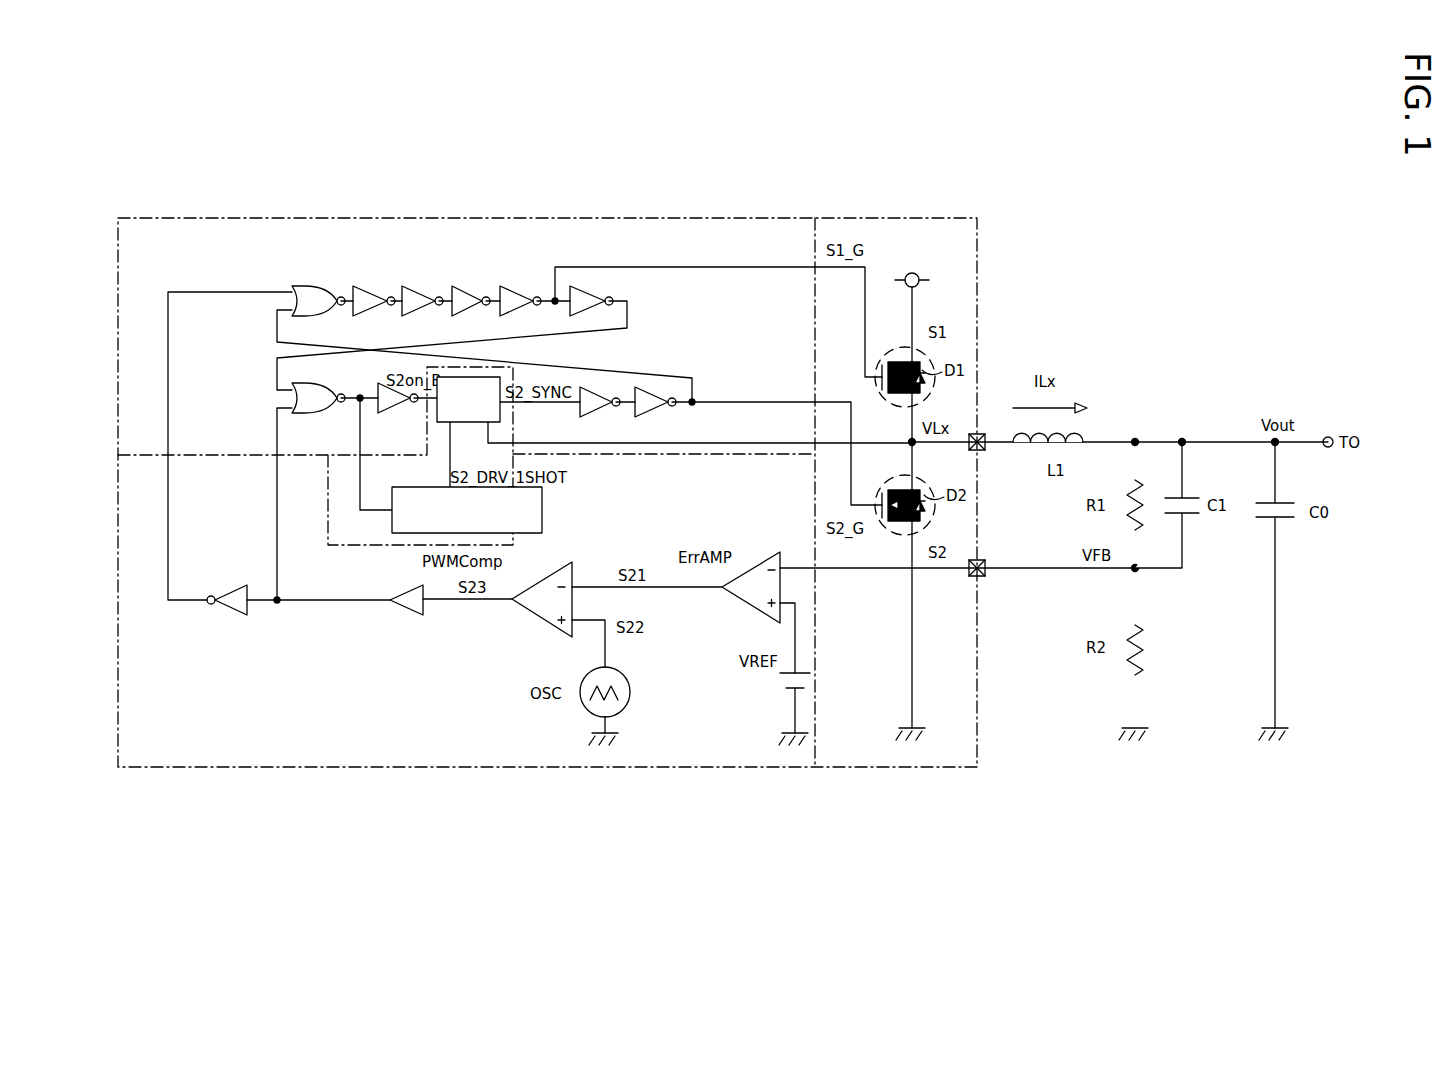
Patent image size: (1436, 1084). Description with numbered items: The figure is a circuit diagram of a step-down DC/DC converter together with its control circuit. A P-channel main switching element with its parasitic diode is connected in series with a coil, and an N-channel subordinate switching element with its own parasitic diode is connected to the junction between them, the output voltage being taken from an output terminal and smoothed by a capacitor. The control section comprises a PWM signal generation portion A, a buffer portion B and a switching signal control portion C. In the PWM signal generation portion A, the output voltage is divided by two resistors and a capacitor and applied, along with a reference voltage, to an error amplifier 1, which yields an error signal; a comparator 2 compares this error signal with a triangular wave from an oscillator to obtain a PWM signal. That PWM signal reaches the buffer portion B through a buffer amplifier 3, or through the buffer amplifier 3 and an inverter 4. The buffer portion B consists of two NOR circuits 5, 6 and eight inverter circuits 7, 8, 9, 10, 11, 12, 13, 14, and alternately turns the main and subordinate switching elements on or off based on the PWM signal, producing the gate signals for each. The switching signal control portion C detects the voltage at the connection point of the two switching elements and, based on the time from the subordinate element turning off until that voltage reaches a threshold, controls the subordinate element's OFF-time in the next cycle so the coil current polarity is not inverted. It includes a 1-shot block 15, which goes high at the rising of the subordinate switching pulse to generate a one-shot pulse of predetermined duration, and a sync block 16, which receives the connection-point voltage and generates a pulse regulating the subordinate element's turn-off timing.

The error amplifier 1 is at (738, 592).
The comparator 2 is at (538, 612).
The buffer amplifier 3 is at (405, 606).
The inverter 4 is at (238, 606).
The NOR circuit 5 is at (312, 290).
The NOR circuit 6 is at (326, 400).
The inverter circuit 7 is at (367, 293).
The inverter circuit 8 is at (418, 293).
The inverter circuit 9 is at (465, 293).
The inverter circuit 10 is at (515, 293).
The inverter circuit 11 is at (590, 298).
The inverter circuit 12 is at (396, 406).
The inverter circuit 13 is at (600, 405).
The inverter circuit 14 is at (655, 405).
The 1-shot block 15 is at (542, 518).
The sync block 16 is at (500, 380).
The PWM signal generation portion A is at (427, 750).
The buffer portion B is at (749, 216).
The switching signal control portion C is at (348, 540).